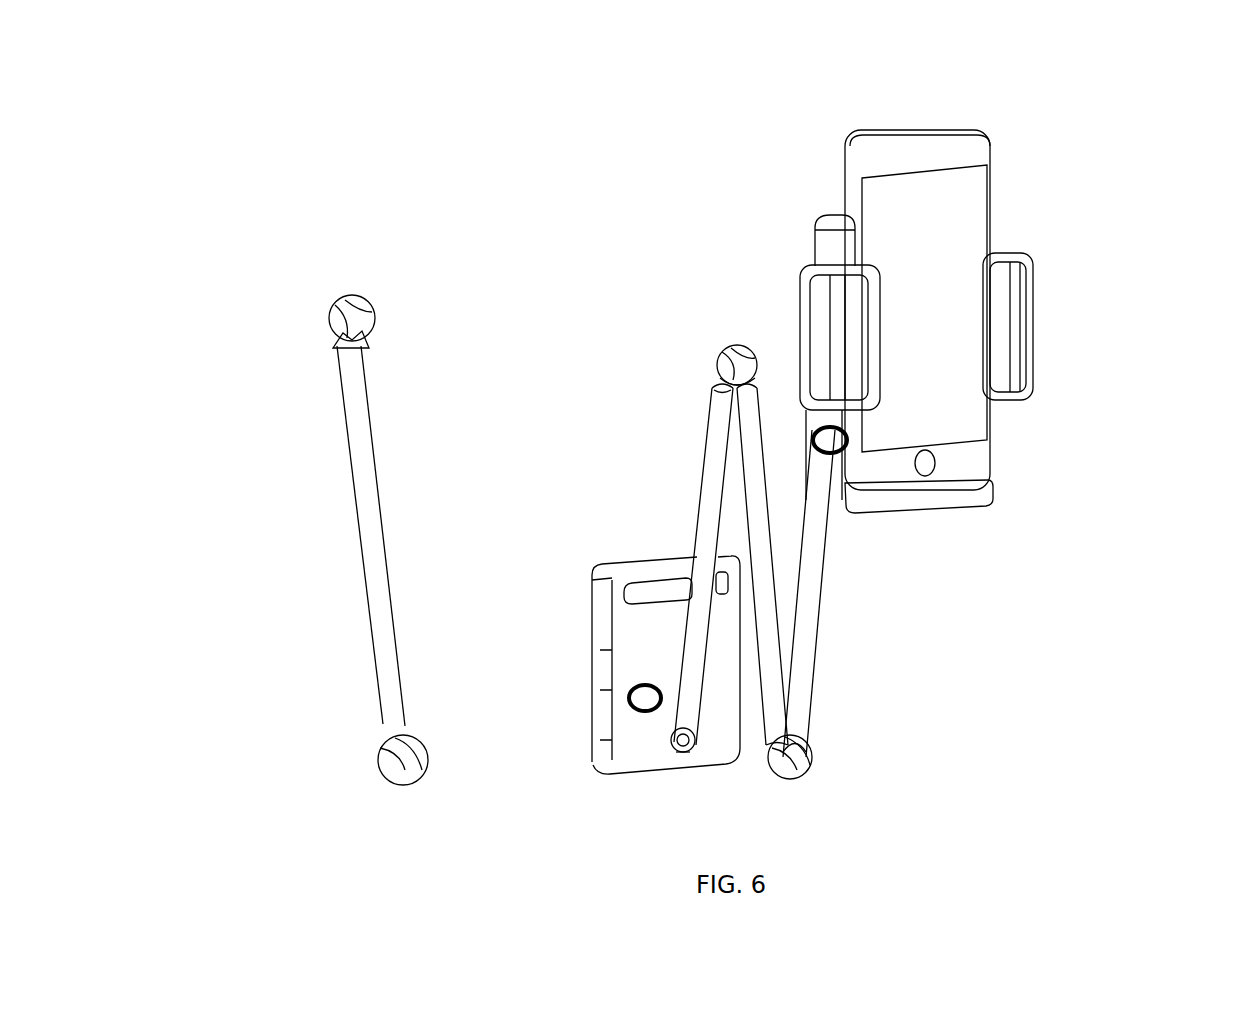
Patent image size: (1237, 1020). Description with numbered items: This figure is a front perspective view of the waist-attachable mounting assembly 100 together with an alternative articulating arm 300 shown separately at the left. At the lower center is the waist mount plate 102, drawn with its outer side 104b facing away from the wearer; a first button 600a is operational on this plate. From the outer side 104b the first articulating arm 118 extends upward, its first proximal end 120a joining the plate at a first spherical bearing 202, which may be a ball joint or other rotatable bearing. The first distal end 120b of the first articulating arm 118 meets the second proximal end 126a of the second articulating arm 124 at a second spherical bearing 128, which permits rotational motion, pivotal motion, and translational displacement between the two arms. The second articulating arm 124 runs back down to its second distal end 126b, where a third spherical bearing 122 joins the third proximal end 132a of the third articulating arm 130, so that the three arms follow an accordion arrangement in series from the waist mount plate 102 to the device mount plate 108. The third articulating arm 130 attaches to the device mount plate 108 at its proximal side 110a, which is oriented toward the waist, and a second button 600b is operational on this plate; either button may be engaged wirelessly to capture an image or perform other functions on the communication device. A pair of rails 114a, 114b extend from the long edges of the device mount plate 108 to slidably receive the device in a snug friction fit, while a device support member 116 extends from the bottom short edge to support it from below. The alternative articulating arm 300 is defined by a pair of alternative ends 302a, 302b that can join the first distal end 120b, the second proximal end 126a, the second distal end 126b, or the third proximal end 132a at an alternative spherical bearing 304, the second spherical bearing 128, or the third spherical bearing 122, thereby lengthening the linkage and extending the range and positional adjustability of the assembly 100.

The waist-attachable mounting assembly 100 is at (536, 188).
The waist mount plate 102 is at (568, 663).
The outer side 104b is at (656, 616).
The device mount plate 108 is at (900, 530).
The proximal side 110a is at (843, 227).
The rail 114a is at (858, 292).
The rail 114b is at (1028, 305).
The device support member 116 is at (985, 493).
The first articulating arm 118 is at (698, 530).
The first proximal end 120a is at (678, 703).
The first distal end 120b is at (717, 407).
The third spherical bearing 122 is at (800, 763).
The second articulating arm 124 is at (766, 527).
The second proximal end 126a is at (755, 405).
The second distal end 126b is at (766, 710).
The second spherical bearing 128 is at (742, 355).
The third articulating arm 130 is at (817, 593).
The third proximal end 132a is at (803, 720).
The first spherical bearing 202 is at (682, 747).
The alternative articulating arm 300 is at (312, 521).
The alternative end 302a is at (337, 365).
The alternative end 302b is at (382, 724).
The alternative spherical bearing 304 is at (365, 300).
The first button 600a is at (630, 701).
The second button 600b is at (830, 455).